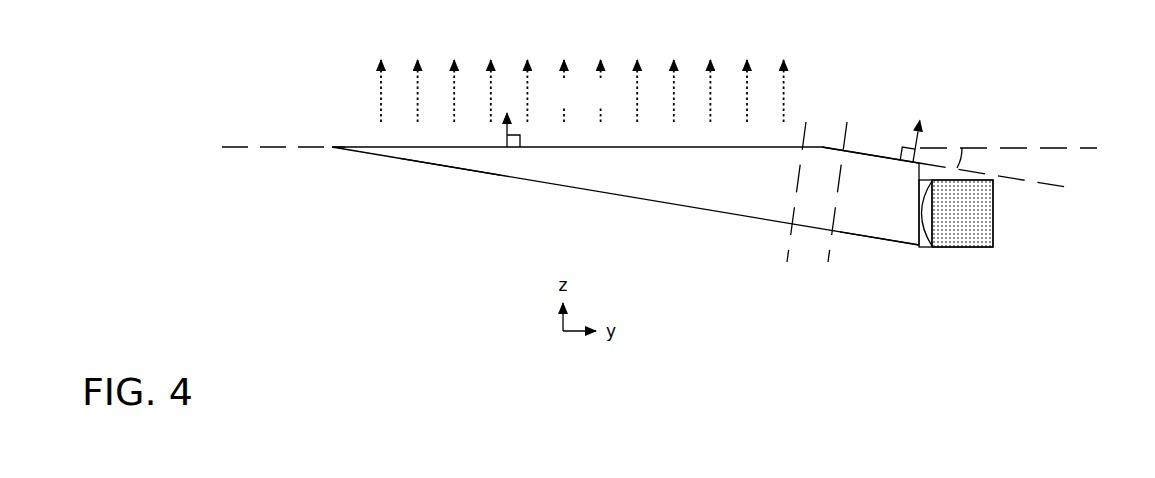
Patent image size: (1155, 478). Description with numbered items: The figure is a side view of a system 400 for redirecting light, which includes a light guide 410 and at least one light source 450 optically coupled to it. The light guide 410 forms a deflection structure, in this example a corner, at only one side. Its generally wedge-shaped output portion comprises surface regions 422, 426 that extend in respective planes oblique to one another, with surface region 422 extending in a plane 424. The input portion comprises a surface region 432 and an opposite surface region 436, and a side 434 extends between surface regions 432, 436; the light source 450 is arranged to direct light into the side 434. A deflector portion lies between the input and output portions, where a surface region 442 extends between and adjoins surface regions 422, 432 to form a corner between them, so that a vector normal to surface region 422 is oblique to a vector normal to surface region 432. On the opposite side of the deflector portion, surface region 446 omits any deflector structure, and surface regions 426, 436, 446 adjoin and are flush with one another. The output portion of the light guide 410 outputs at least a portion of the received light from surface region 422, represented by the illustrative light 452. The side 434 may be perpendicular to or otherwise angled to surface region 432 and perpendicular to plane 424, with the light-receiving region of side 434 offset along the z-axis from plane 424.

The system 400 is at (1097, 110).
The light guide 410 is at (698, 184).
The surface region 422 is at (367, 137).
The plane 424 is at (257, 137).
The surface region 426 is at (442, 175).
The surface region 432 is at (873, 147).
The side 434 is at (910, 212).
The surface region 436 is at (871, 246).
The surface region 442 is at (829, 139).
The surface region 446 is at (809, 236).
The light source 450 is at (924, 213).
The light 452 is at (569, 102).